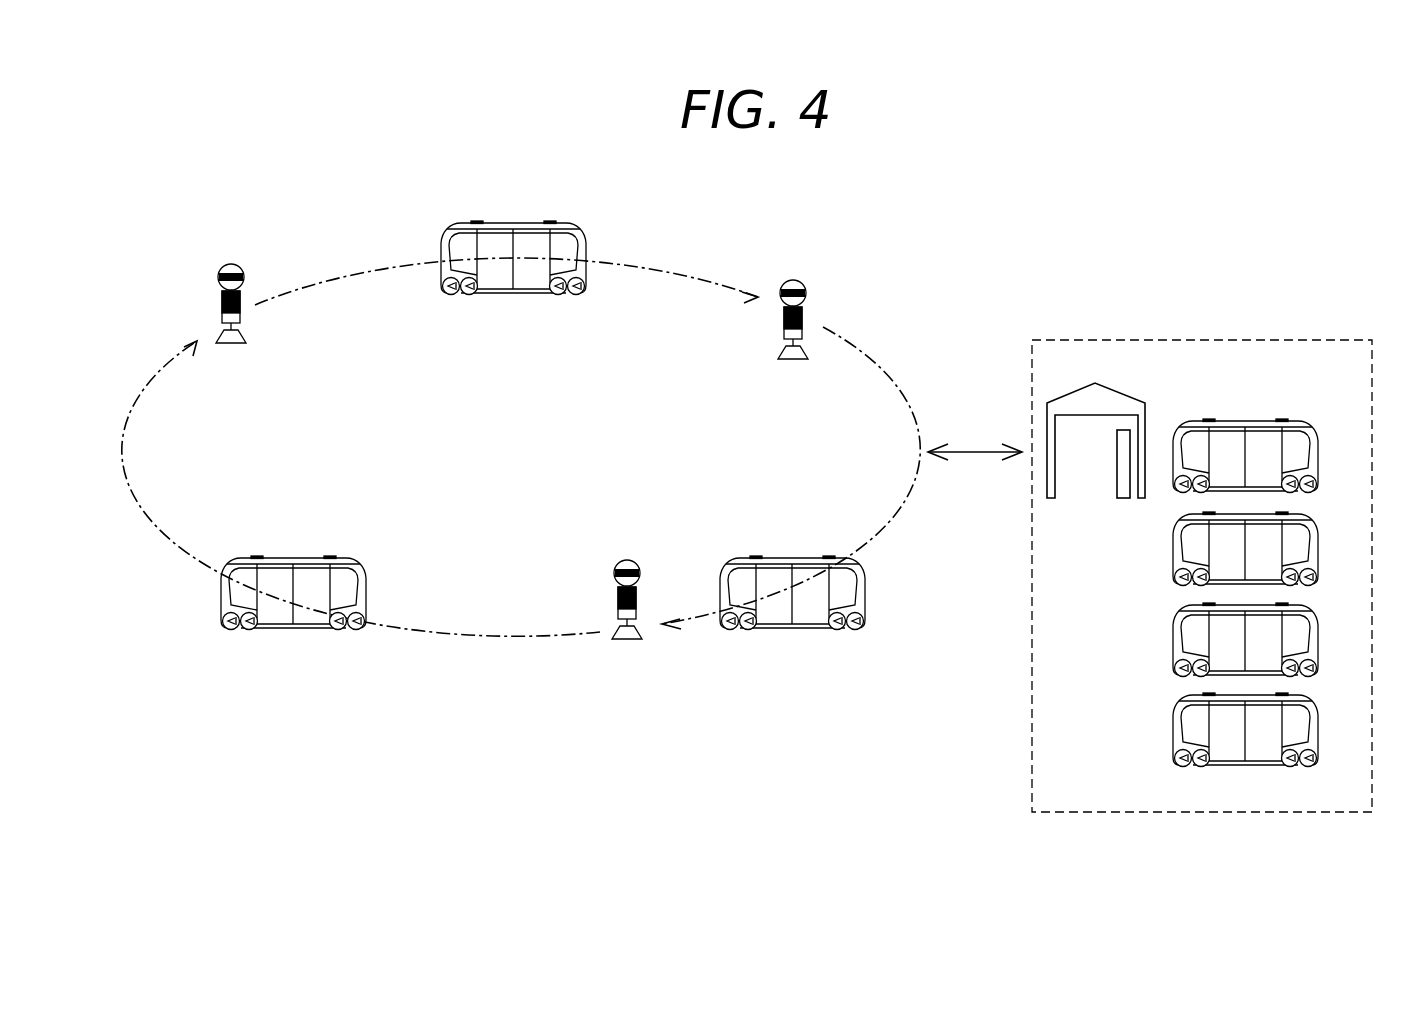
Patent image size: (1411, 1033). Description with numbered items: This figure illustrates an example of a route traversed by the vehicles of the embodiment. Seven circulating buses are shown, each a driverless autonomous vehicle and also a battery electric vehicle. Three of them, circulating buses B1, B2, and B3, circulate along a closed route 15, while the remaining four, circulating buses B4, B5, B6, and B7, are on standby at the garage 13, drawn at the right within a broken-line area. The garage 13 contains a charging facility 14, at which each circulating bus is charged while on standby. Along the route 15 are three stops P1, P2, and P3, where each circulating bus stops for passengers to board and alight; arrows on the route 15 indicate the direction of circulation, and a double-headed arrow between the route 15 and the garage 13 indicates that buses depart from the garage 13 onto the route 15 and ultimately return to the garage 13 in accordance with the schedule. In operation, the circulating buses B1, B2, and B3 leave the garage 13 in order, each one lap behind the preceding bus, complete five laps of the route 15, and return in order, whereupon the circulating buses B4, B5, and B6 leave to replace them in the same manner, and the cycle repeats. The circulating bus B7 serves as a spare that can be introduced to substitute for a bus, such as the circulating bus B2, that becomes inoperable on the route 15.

The garage 13 is at (1210, 338).
The charging facility 14 is at (1117, 468).
The route 15 is at (675, 258).
The circulating bus B1 is at (783, 557).
The circulating bus B2 is at (344, 558).
The circulating bus B3 is at (513, 224).
The circulating bus B4 is at (1310, 428).
The circulating bus B5 is at (1310, 521).
The circulating bus B6 is at (1310, 612).
The spare circulating bus B7 is at (1310, 702).
The stop P1 is at (616, 560).
The stop P2 is at (244, 266).
The stop P3 is at (805, 282).